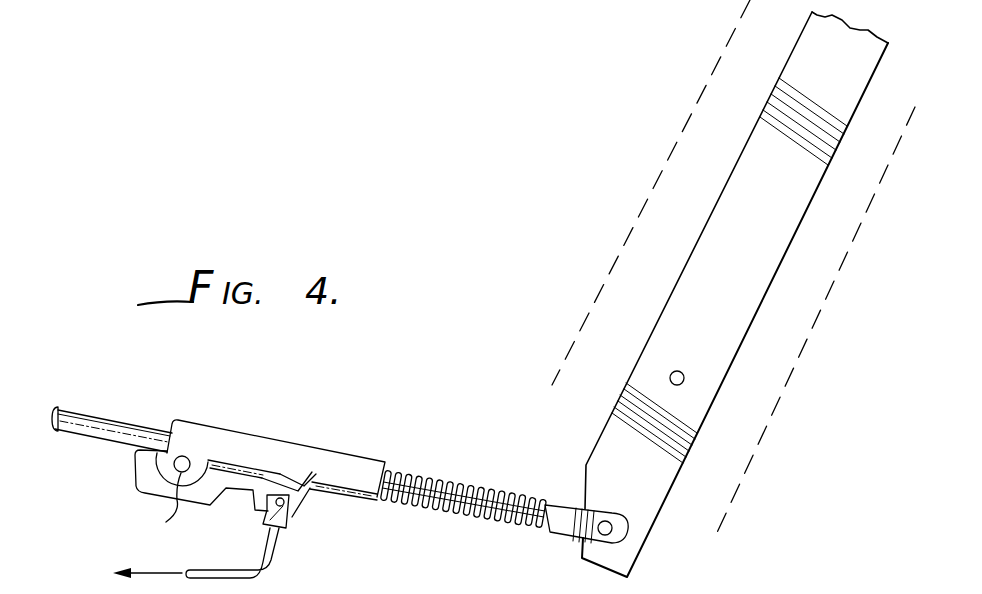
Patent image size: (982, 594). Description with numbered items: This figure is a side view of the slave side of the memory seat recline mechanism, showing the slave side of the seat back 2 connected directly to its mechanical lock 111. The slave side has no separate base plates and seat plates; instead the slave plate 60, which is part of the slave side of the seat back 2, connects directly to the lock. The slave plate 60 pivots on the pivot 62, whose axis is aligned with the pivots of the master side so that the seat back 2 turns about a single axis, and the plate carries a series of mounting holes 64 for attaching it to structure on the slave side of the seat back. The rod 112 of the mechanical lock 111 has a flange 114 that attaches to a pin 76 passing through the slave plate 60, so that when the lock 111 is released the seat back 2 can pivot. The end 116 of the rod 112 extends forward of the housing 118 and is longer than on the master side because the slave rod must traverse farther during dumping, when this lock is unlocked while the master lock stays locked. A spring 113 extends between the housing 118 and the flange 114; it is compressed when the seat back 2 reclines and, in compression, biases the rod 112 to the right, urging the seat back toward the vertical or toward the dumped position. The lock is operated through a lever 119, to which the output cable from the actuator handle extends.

The seat back 2 is at (805, 357).
The slave plate 60 is at (742, 294).
The mounting holes 64 is at (753, 273).
The pivot 62 is at (684, 380).
The pin 76 is at (623, 542).
The slave-side mechanical lock 111 is at (220, 467).
The rod 112 is at (214, 428).
The spring 113 is at (438, 487).
The flange 114 is at (568, 528).
The end of the rod 116 is at (60, 412).
The housing 118 is at (237, 438).
The lever 119 is at (288, 532).